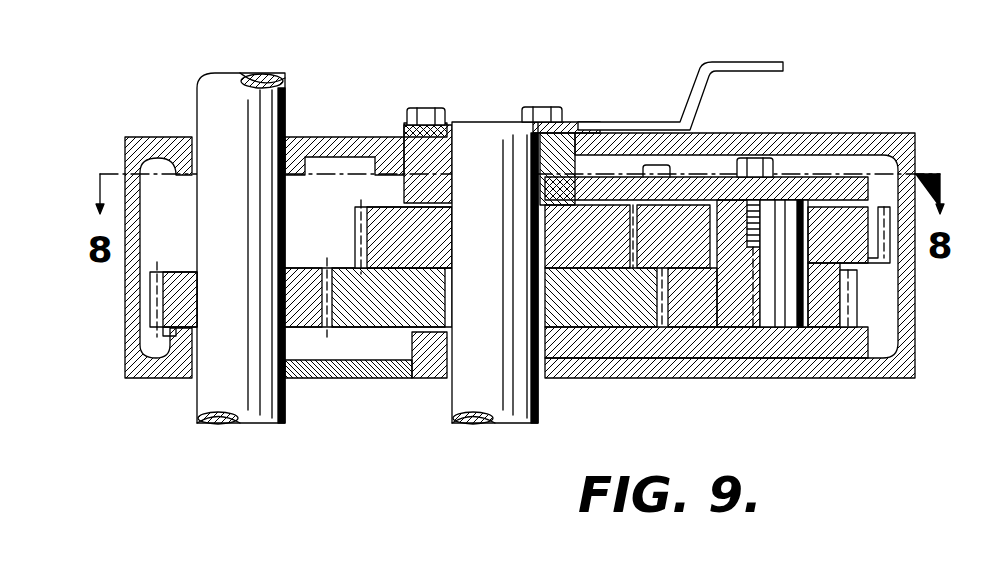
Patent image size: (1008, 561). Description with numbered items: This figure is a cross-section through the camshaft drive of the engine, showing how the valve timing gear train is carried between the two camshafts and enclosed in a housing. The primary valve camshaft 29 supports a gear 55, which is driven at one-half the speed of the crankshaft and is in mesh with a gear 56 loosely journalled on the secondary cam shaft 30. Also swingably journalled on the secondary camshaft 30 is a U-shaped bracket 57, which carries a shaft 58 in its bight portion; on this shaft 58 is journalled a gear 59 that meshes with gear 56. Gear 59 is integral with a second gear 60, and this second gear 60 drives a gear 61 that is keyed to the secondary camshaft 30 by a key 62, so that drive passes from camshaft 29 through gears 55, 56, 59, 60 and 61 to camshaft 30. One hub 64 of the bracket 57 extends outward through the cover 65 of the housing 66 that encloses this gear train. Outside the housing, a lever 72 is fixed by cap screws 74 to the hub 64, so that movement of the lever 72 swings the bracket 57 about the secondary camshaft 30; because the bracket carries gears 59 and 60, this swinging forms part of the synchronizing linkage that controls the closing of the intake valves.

The primary valve camshaft 29 is at (235, 85).
The secondary cam shaft 30 is at (484, 130).
The gear 55 is at (180, 272).
The gear 56 is at (346, 276).
The U-shaped bracket 57 is at (848, 172).
The shaft 58 is at (820, 210).
The gear 59 is at (850, 300).
The second gear 60 is at (890, 262).
The gear 61 is at (357, 226).
The key 62 is at (543, 235).
The hub 64 is at (570, 133).
The cover 65 is at (168, 138).
The housing 66 is at (133, 198).
The lever 72 is at (690, 85).
The cap screws 74 is at (428, 118).